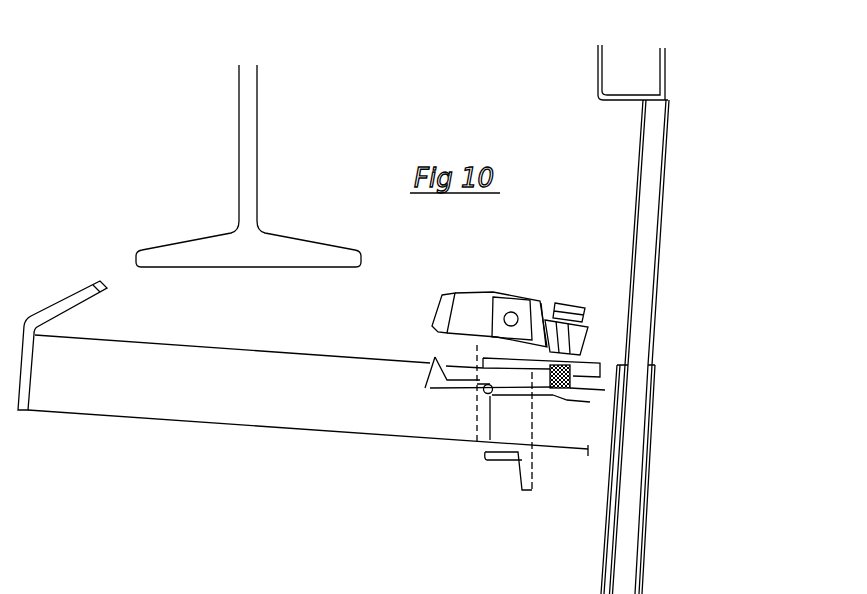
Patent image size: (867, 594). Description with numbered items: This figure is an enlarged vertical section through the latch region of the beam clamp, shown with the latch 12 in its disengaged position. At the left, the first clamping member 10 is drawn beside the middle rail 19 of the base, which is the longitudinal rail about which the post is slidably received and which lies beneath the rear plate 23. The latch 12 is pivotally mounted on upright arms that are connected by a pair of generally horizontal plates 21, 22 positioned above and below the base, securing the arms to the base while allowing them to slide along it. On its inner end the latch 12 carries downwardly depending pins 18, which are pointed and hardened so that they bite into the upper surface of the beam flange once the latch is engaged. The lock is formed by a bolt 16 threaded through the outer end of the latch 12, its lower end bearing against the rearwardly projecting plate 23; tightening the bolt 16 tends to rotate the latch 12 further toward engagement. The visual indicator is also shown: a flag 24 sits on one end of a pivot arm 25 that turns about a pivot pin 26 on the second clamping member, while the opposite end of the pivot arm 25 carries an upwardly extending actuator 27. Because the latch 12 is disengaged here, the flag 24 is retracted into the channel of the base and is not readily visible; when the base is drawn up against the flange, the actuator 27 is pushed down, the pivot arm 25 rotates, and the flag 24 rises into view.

The first clamping member 10 is at (67, 300).
The latch 12 is at (482, 297).
The bolt 16 is at (572, 308).
The pins 18 is at (437, 328).
The middle rail 19 is at (353, 413).
The horizontal plate 21 is at (488, 462).
The horizontal plate 22 is at (520, 365).
The rearwardly projecting plate 23 is at (588, 370).
The flag 24 is at (570, 387).
The pivot arm 25 is at (560, 400).
The pivot pin 26 is at (488, 396).
The actuator 27 is at (430, 365).